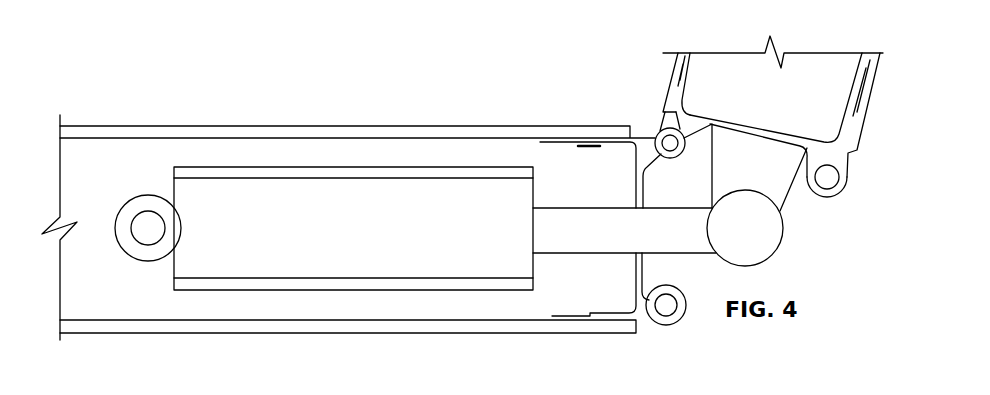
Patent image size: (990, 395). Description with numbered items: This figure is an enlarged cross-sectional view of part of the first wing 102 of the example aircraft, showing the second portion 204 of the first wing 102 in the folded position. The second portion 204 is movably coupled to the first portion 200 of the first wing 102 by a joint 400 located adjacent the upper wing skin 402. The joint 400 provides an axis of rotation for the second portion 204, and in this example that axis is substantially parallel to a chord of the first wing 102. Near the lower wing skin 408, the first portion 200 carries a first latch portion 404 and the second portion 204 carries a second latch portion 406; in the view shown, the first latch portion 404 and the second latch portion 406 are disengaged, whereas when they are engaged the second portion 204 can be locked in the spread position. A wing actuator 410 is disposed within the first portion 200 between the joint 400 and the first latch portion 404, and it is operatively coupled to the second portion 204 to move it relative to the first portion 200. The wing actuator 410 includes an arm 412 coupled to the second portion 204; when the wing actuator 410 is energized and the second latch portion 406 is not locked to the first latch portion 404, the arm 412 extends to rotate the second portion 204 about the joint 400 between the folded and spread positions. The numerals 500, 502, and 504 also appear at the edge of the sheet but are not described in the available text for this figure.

The first wing 102 is at (270, 82).
The first portion 200 is at (201, 150).
The second portion 204 is at (834, 83).
The joint 400 is at (668, 141).
The upper wing skin 402 is at (482, 131).
The first latch portion 404 is at (666, 304).
The second latch portion 406 is at (830, 181).
The lower wing skin 408 is at (262, 329).
The wing actuator 410 is at (212, 267).
The arm 412 is at (550, 222).
The component 500 is at (596, 391).
The component 502 is at (514, 391).
The component 504 is at (404, 391).